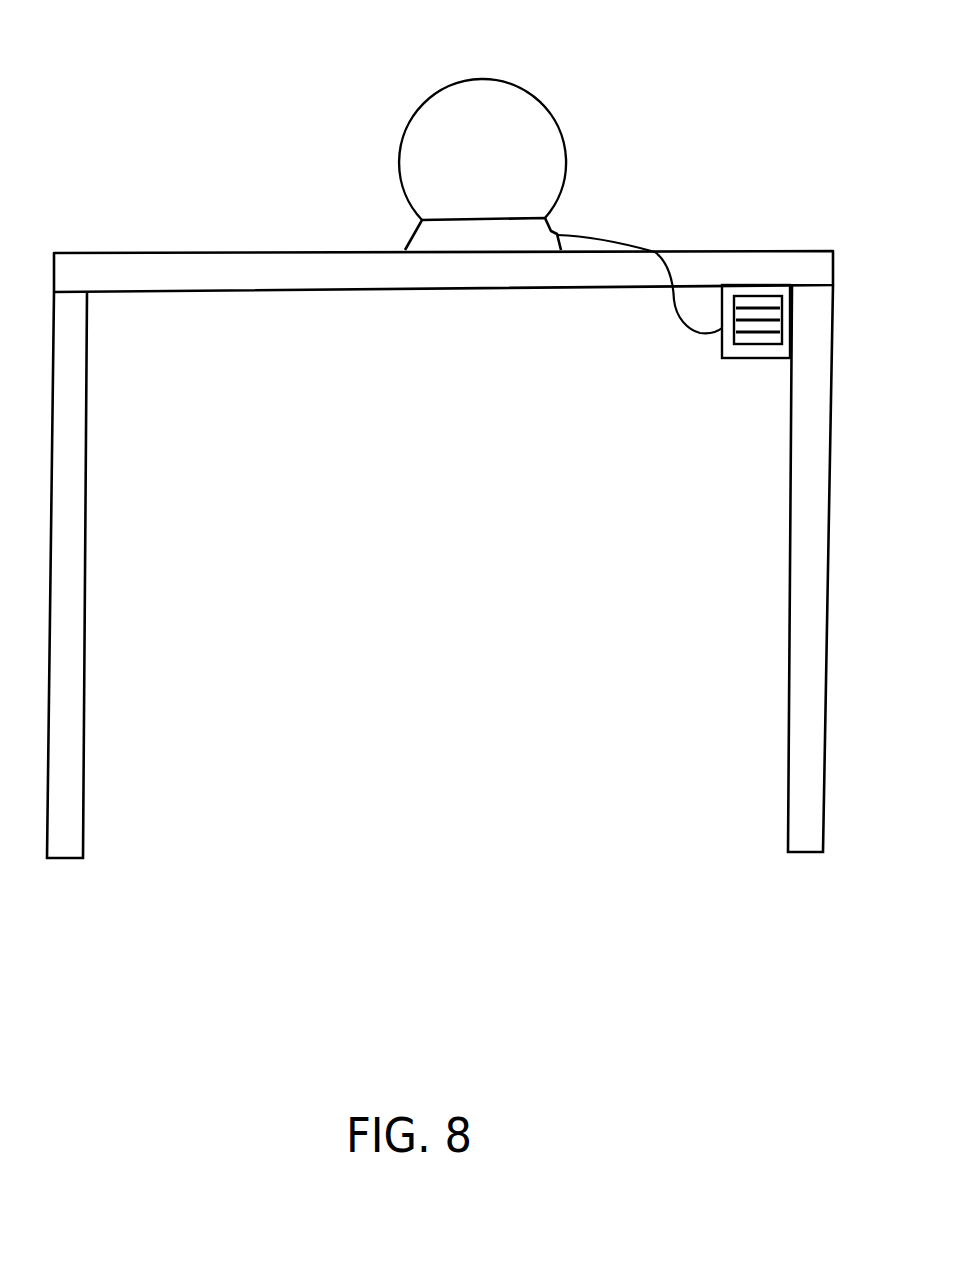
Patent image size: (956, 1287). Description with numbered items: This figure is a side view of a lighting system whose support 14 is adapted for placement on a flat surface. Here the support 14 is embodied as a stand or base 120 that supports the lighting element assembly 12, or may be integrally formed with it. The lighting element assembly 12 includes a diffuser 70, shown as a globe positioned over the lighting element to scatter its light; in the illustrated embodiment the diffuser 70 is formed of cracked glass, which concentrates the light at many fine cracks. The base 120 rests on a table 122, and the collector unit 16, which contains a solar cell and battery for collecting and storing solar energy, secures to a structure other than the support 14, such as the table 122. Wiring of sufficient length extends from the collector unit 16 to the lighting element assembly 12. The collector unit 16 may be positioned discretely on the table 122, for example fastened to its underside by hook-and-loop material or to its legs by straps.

The lighting element assembly 12 is at (518, 187).
The diffuser 70 is at (531, 100).
The support 14 is at (388, 221).
The base 120 is at (437, 233).
The table 122 is at (188, 280).
The collector unit 16 is at (706, 363).